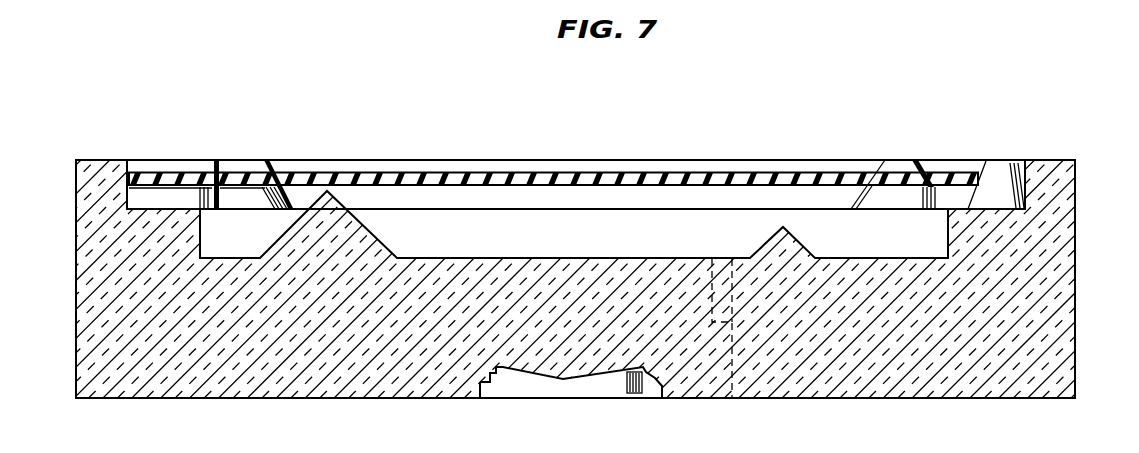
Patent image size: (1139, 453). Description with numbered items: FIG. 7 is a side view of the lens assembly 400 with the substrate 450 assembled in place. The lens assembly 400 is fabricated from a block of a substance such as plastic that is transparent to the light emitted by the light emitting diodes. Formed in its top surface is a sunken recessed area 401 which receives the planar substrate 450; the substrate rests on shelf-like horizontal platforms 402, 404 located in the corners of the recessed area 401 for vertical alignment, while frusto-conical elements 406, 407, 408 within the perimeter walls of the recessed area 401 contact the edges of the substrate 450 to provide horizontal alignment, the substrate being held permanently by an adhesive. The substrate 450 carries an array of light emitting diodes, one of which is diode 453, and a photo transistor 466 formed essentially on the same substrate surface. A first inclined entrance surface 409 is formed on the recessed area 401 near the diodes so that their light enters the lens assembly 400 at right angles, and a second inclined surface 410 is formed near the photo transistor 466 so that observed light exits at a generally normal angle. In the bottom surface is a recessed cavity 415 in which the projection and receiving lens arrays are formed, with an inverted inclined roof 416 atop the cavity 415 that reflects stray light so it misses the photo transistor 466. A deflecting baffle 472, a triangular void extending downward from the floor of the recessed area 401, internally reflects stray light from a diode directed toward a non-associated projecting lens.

The lens assembly 400 is at (1131, 340).
The recessed area 401 is at (589, 258).
The horizontal platform 402 is at (217, 172).
The horizontal platform 404 is at (950, 196).
The frusto-conical element 406 is at (249, 167).
The frusto-conical element 407 is at (896, 163).
The frusto-conical element 408 is at (1004, 164).
The first inclined entrance surface 409 is at (797, 246).
The second inclined surface 410 is at (279, 238).
The recessed cavity 415 is at (607, 394).
The inverted inclined roof 416 is at (551, 380).
The substrate 450 is at (561, 175).
The light emitting diode 453 is at (852, 186).
The photo transistor 466 is at (203, 188).
The deflecting baffle 472 is at (732, 398).